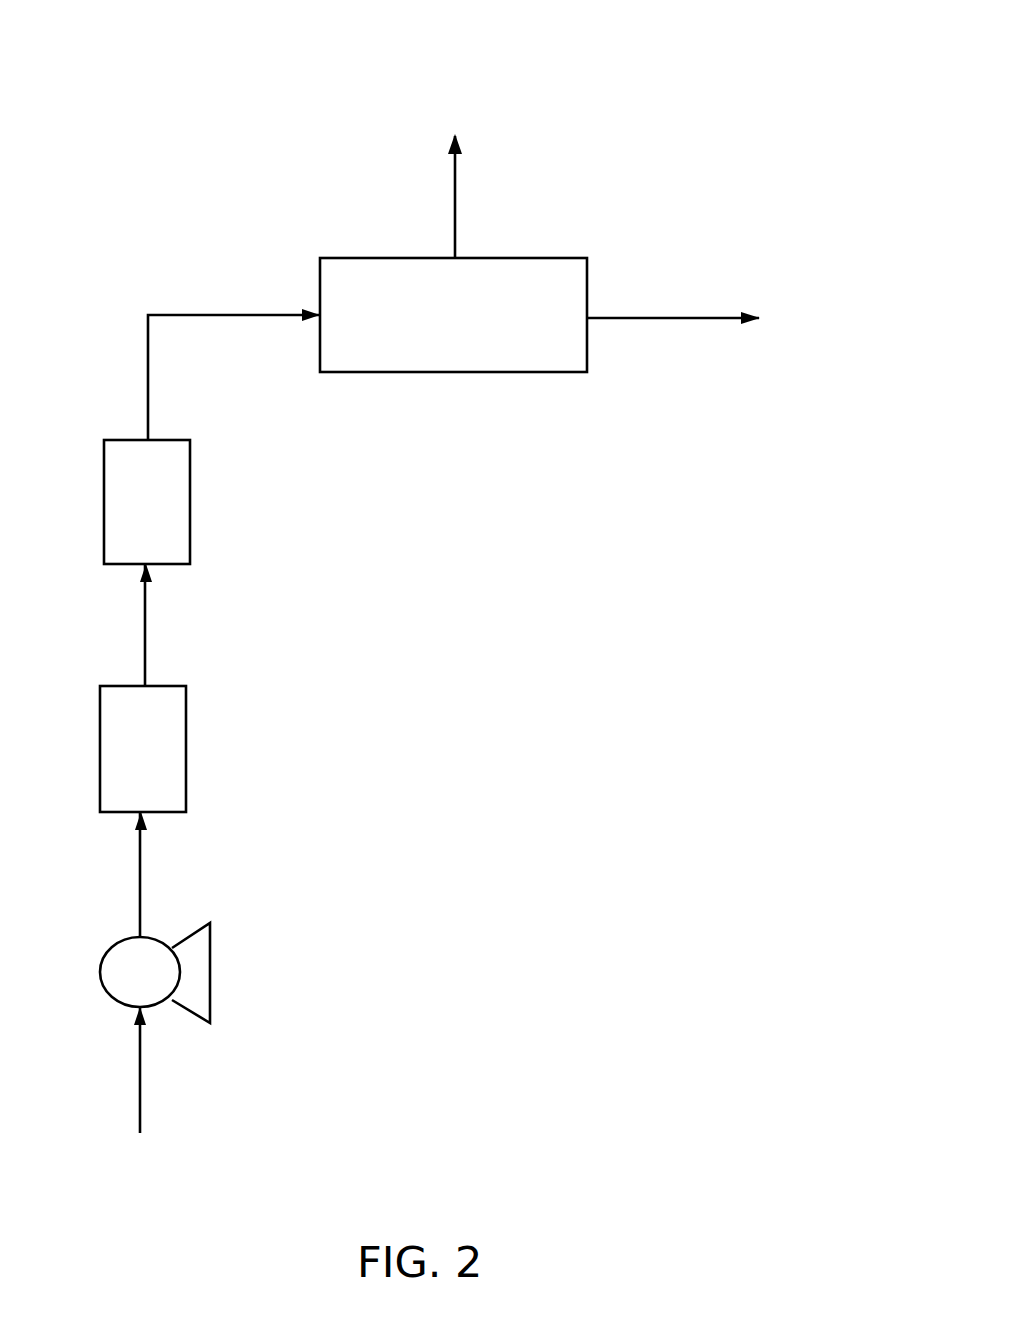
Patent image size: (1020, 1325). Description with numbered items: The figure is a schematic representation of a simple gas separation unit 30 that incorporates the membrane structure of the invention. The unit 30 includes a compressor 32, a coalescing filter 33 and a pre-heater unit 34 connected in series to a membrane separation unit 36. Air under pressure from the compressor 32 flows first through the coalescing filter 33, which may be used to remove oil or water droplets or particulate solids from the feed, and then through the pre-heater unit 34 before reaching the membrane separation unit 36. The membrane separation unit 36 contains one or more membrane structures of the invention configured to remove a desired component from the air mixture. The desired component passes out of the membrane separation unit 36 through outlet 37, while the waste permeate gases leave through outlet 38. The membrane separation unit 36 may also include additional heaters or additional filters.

The gas separation unit 30 is at (710, 55).
The compressor 32 is at (210, 973).
The coalescing filter 33 is at (186, 750).
The pre-heater unit 34 is at (190, 503).
The membrane separation unit 36 is at (545, 258).
The outlet 37 is at (663, 318).
The outlet 38 is at (453, 203).